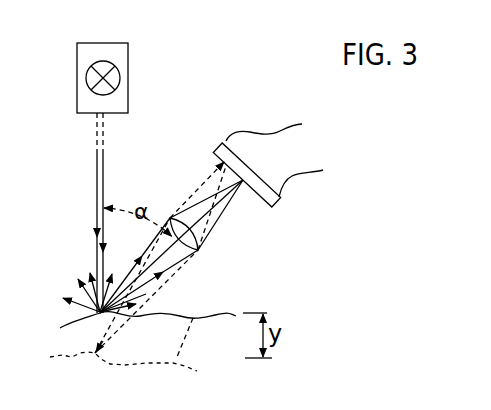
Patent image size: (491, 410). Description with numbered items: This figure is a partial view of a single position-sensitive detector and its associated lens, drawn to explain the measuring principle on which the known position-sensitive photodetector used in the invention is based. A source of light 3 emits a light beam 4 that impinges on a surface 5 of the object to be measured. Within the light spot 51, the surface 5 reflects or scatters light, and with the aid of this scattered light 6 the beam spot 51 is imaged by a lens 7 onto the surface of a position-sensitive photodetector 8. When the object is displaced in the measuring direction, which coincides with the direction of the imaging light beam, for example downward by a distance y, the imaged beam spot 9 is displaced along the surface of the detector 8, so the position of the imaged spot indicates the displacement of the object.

The source of light 3 is at (124, 94).
The light beam 4 is at (104, 169).
The surface 5 is at (198, 318).
The light spot 51 is at (93, 304).
The scattered light 6 is at (160, 277).
The lens 7 is at (199, 250).
The position-sensitive photodetector 8 is at (268, 204).
The imaged beam spot 9 is at (232, 152).